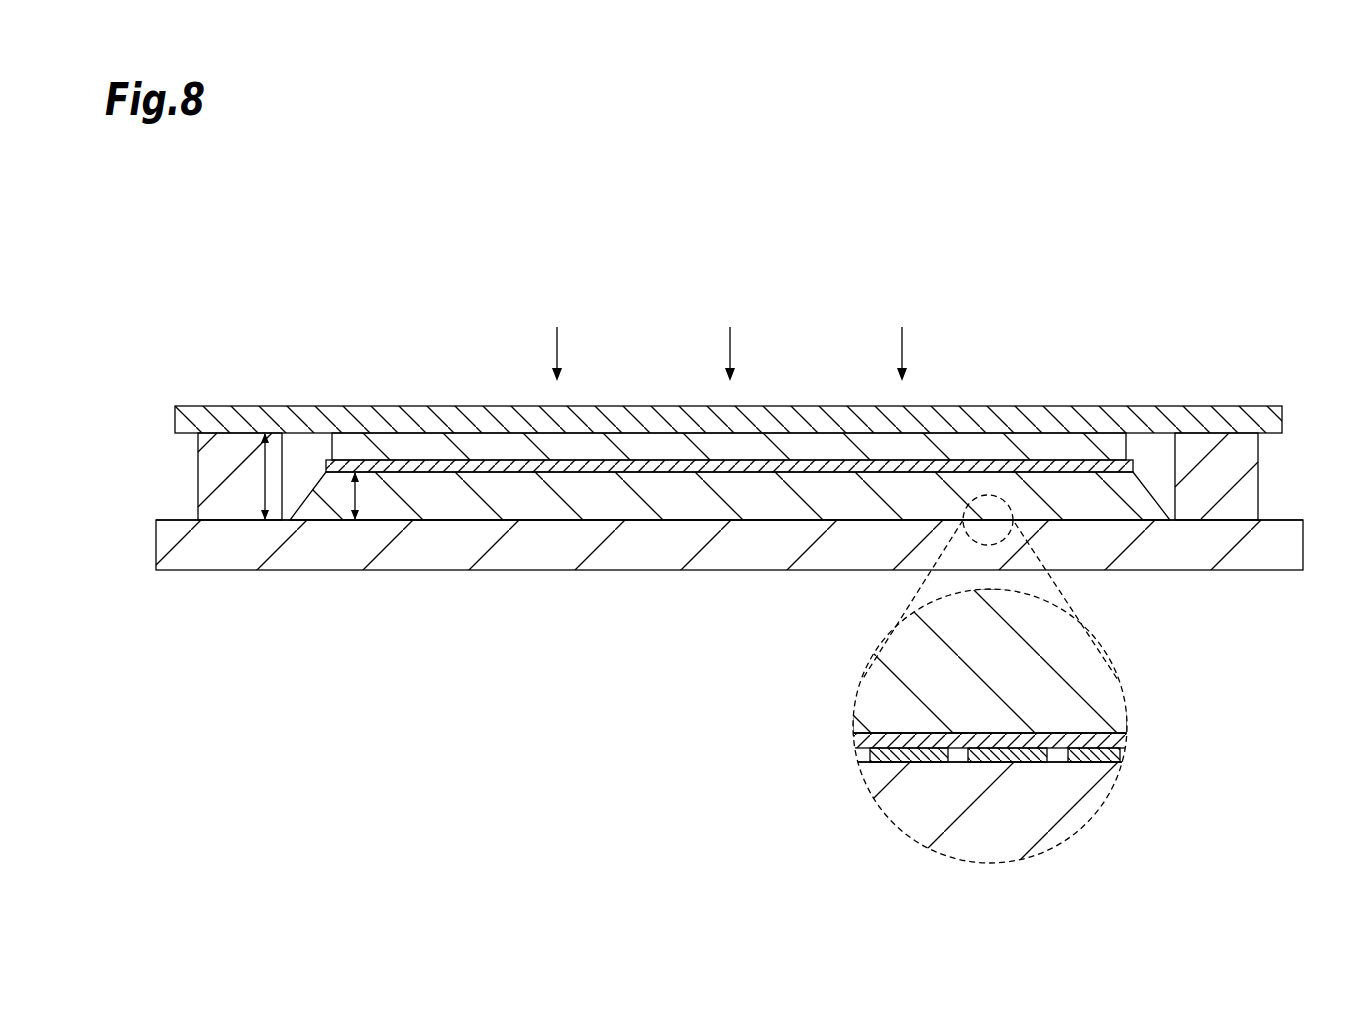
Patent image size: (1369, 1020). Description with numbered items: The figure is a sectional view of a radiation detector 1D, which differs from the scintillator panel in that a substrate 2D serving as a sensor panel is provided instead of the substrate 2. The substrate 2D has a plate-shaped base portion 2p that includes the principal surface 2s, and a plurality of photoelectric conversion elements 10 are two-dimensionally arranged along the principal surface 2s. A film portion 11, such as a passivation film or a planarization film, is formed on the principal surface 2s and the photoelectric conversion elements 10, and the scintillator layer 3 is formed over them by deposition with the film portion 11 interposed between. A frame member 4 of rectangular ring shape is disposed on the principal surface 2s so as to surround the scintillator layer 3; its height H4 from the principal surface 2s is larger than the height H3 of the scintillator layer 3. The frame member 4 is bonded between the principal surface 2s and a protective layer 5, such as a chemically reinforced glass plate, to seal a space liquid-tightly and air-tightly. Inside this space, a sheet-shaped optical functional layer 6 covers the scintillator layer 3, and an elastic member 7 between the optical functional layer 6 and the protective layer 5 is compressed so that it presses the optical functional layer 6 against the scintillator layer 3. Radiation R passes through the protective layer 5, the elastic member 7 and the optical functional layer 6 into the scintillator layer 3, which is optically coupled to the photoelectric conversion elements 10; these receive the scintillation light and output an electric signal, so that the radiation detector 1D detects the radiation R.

The radiation detector 1D is at (1124, 236).
The substrate 2 is at (1297, 552).
The principal surface 2s is at (1287, 518).
The substrate (sensor panel) 2D is at (1203, 720).
The base portion 2p is at (1077, 800).
The scintillator layer 3 is at (770, 510).
The frame member 4 is at (212, 478).
The protective layer 5 is at (1117, 420).
The optical functional layer 6 is at (1077, 465).
The elastic member 7 is at (1040, 445).
The photoelectric conversion elements 10 is at (1100, 764).
The film portion 11 is at (1047, 733).
The height of the scintillator layer H3 is at (357, 494).
The height of the frame member H4 is at (262, 486).
The radiation R is at (558, 342).